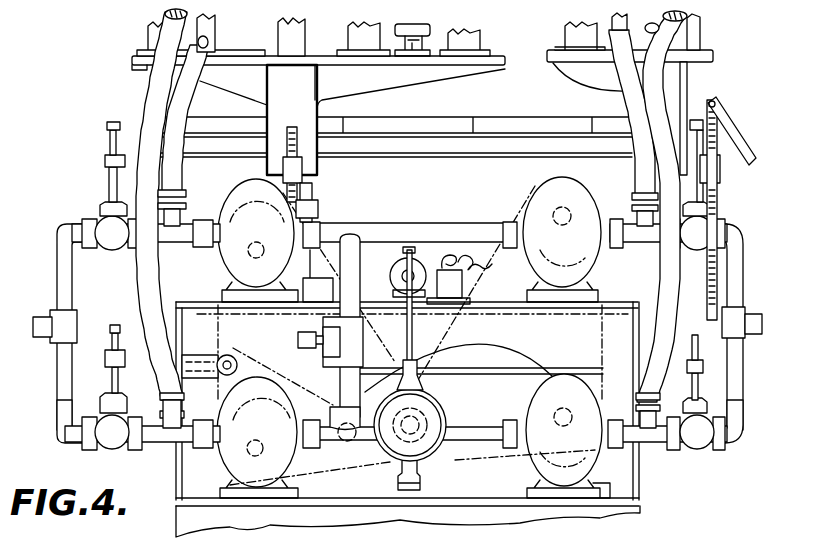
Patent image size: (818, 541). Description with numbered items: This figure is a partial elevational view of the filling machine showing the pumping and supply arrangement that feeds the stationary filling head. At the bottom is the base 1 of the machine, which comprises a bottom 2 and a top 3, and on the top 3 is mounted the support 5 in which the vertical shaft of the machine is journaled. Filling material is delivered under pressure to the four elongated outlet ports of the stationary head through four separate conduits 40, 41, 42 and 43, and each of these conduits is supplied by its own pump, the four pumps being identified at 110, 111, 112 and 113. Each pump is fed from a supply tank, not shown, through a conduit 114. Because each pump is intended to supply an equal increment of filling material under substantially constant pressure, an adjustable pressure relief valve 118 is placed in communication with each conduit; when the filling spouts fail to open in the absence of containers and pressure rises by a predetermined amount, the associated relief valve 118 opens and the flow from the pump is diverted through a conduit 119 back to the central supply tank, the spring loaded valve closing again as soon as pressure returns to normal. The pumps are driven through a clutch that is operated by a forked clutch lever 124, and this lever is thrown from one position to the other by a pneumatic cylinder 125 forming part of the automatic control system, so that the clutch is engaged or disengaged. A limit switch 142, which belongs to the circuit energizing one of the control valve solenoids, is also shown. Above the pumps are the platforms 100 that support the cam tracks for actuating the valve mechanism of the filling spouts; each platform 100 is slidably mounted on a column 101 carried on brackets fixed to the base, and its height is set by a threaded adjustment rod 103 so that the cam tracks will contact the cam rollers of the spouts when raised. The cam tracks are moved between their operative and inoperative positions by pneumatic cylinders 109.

The base 1 is at (635, 512).
The bottom 2 is at (615, 494).
The top 3 is at (514, 304).
The support 5 is at (202, 303).
The conduit 40 is at (667, 81).
The conduit 41 is at (623, 96).
The conduit 42 is at (186, 104).
The conduit 43 is at (148, 97).
The platform 100 is at (403, 92).
The column 101 is at (306, 36).
The threaded adjustment rod 103 is at (306, 186).
The pneumatic cylinder 109 is at (428, 25).
The pump 110 is at (590, 365).
The pump 111 is at (537, 194).
The pump 112 is at (240, 188).
The pump 113 is at (220, 452).
The conduit 114 is at (298, 334).
The adjustable pressure relief valve 118 is at (106, 178).
The conduit 119 is at (45, 312).
The forked clutch lever 124 is at (414, 335).
The pneumatic cylinder 125 is at (392, 274).
The limit switch 142 is at (458, 284).